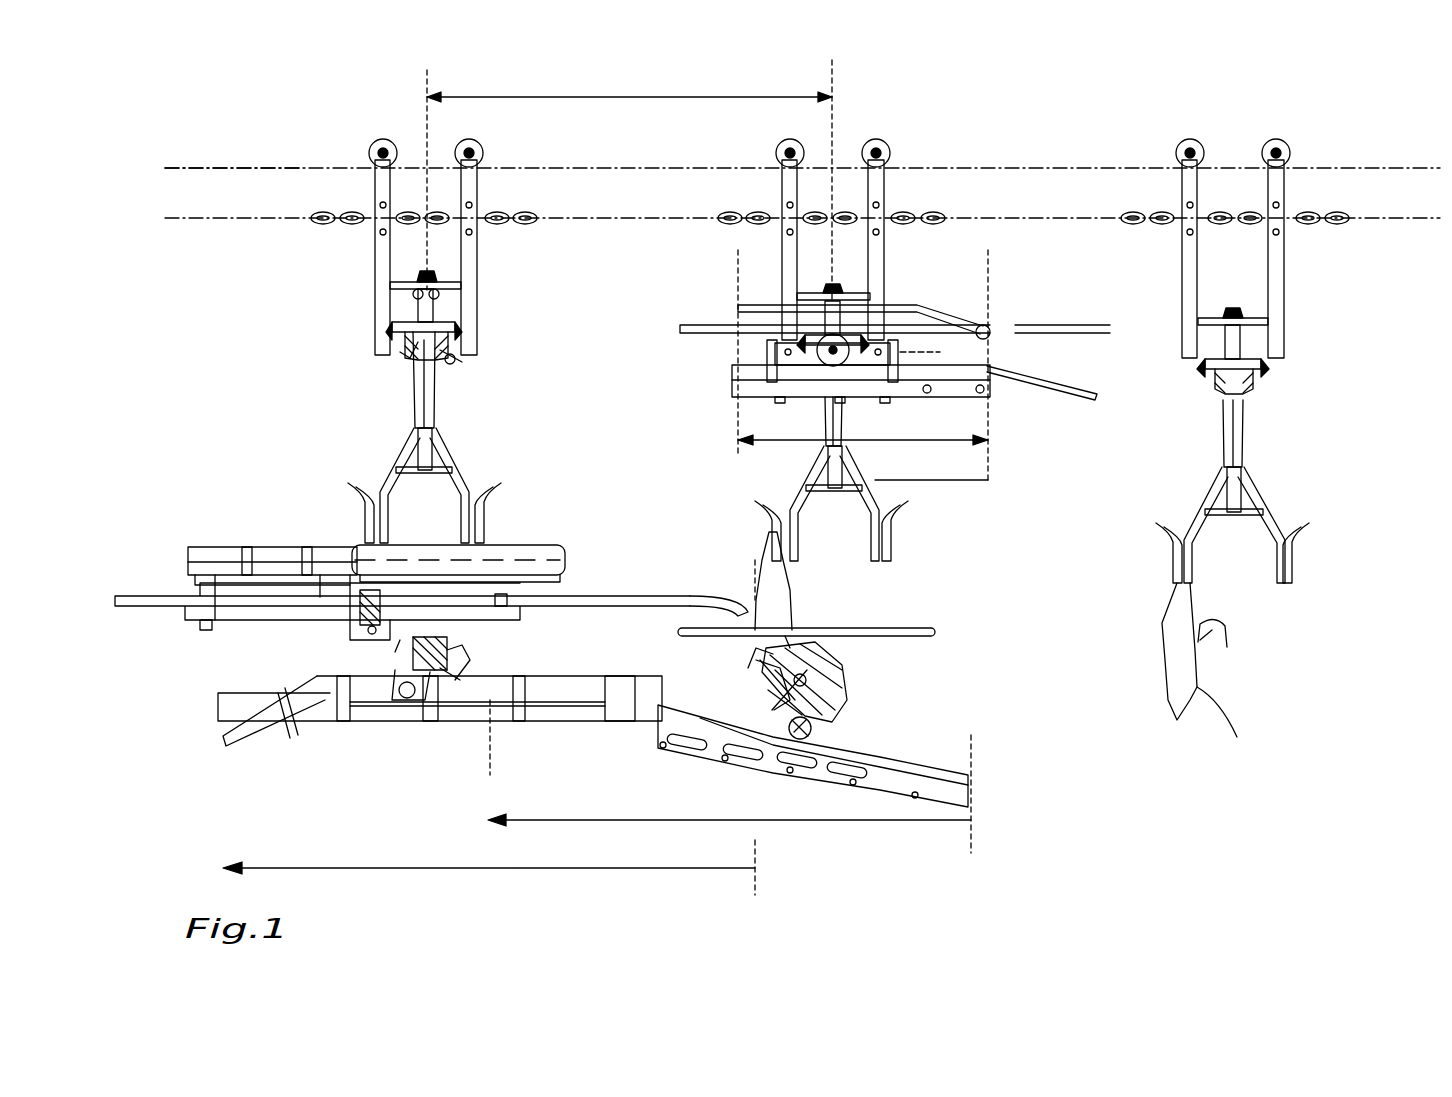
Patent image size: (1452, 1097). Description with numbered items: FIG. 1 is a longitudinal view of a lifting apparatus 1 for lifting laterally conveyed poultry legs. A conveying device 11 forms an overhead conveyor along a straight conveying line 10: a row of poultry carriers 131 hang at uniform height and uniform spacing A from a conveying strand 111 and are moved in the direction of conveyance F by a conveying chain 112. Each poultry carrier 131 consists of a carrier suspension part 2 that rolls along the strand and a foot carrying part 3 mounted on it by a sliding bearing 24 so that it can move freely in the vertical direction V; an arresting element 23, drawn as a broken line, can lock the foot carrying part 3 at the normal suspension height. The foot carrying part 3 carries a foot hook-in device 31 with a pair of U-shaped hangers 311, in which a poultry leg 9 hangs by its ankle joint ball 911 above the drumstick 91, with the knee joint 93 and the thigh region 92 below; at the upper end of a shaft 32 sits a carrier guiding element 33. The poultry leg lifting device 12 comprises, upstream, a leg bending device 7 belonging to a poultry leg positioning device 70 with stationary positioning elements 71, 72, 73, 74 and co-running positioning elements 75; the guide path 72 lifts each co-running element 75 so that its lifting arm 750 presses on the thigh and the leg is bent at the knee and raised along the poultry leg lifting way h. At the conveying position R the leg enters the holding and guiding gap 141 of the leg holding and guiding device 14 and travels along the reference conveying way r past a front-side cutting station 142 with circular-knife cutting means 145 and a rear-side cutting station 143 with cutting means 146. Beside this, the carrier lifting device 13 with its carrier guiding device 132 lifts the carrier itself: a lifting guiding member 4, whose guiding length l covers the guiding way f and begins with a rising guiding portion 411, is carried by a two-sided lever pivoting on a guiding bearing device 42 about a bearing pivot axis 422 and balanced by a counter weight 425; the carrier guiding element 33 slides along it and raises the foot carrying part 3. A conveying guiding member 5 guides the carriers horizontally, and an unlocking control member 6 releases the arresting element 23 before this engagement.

The lifting apparatus 1 is at (1085, 157).
The conveying line 10 is at (595, 168).
The conveying device 11 is at (260, 231).
The conveying strand 111 is at (245, 165).
The conveying chain 112 is at (330, 226).
The poultry leg lifting device 12 is at (720, 566).
The carrier lifting device 13 is at (1137, 258).
The poultry carrier 131 is at (405, 133).
The carrier guiding device 132 is at (998, 305).
The leg holding and guiding device 14 is at (294, 520).
The holding and guiding gap 141 is at (300, 610).
The front-side cutting station 142 is at (500, 550).
The rear-side cutting station 143 is at (290, 555).
The cutting means 145 is at (352, 625).
The cutting means 146 is at (220, 612).
The carrier suspension part 2 is at (380, 284).
The arresting element 23 is at (455, 362).
The sliding bearing 24 is at (412, 345).
The foot carrying part 3 is at (412, 400).
The foot hook-in device 31 is at (468, 490).
The hanger 311 is at (478, 520).
The shaft 32 is at (400, 312).
The carrier guiding element 33 is at (440, 288).
The lifting guiding member 4 is at (905, 305).
The rising guiding portion 411 is at (1014, 344).
The guiding bearing device 42 is at (717, 369).
The bearing pivot axis 422 is at (740, 328).
The counter weight 425 is at (840, 365).
The conveying guiding member 5 is at (1060, 333).
The unlocking control member 6 is at (1055, 392).
The leg bending device 7 is at (878, 704).
The poultry leg positioning device 70 is at (795, 747).
The stationary positioning element 71 is at (905, 636).
The positioning element 72 is at (950, 755).
The stationary positioning element 73 is at (465, 724).
The positioning element 74 is at (685, 600).
The co-running positioning element 75 is at (400, 695).
The lifting arm 750 is at (762, 676).
The poultry leg 9 is at (792, 612).
The drumstick 91 is at (1190, 603).
The ankle joint ball 911 is at (362, 505).
The thigh 92 is at (1234, 727).
The knee joint 93 is at (1221, 652).
The spacing A is at (629, 180).
The straight direction V is at (507, 275).
The direction of conveyance F is at (1100, 193).
The guiding way f is at (728, 480).
The guiding length l is at (863, 365).
The poultry leg lifting way h is at (729, 794).
The reference conveying way r is at (489, 866).
The conveying position R is at (500, 752).